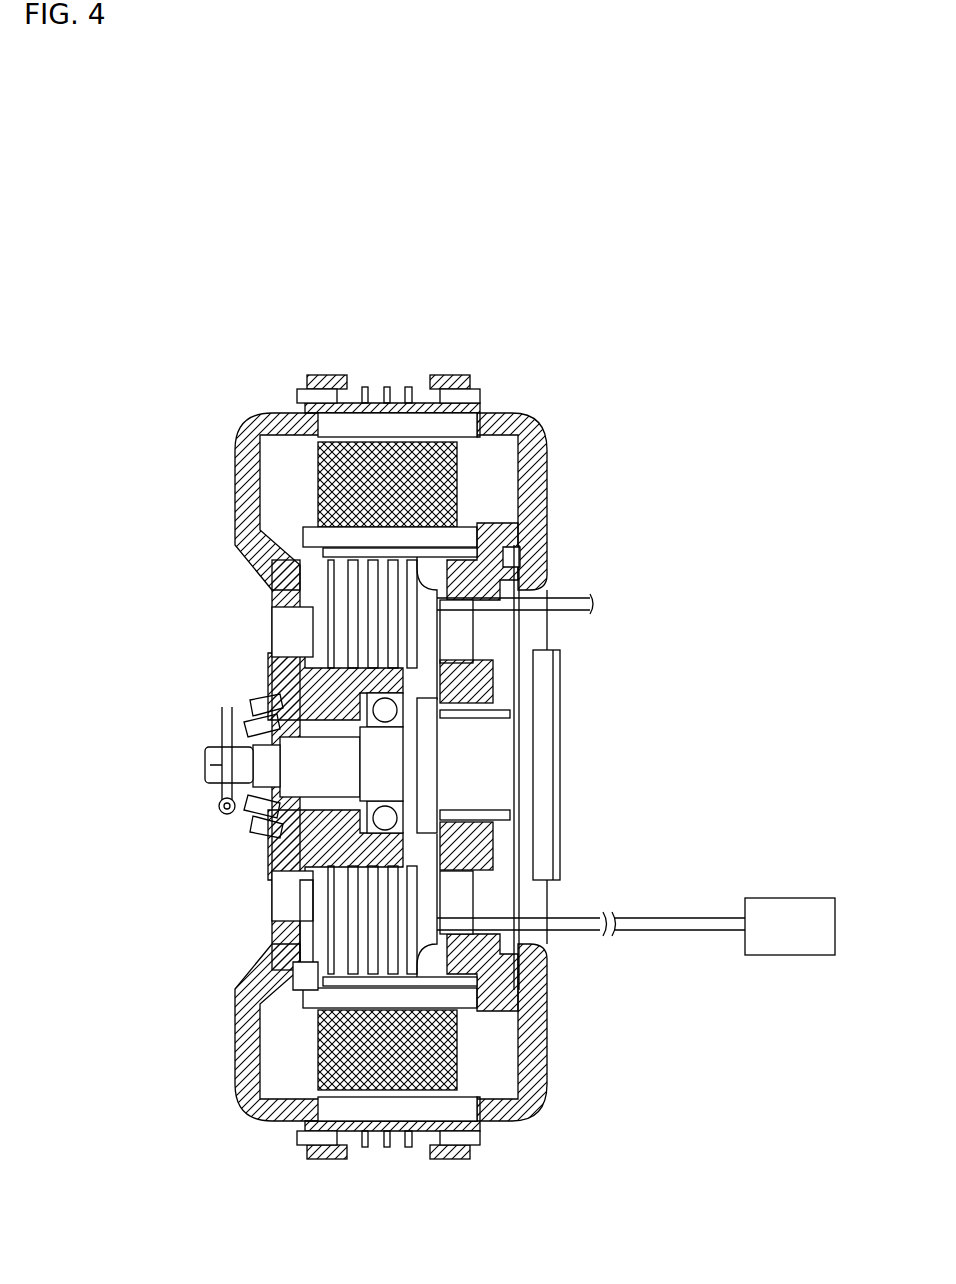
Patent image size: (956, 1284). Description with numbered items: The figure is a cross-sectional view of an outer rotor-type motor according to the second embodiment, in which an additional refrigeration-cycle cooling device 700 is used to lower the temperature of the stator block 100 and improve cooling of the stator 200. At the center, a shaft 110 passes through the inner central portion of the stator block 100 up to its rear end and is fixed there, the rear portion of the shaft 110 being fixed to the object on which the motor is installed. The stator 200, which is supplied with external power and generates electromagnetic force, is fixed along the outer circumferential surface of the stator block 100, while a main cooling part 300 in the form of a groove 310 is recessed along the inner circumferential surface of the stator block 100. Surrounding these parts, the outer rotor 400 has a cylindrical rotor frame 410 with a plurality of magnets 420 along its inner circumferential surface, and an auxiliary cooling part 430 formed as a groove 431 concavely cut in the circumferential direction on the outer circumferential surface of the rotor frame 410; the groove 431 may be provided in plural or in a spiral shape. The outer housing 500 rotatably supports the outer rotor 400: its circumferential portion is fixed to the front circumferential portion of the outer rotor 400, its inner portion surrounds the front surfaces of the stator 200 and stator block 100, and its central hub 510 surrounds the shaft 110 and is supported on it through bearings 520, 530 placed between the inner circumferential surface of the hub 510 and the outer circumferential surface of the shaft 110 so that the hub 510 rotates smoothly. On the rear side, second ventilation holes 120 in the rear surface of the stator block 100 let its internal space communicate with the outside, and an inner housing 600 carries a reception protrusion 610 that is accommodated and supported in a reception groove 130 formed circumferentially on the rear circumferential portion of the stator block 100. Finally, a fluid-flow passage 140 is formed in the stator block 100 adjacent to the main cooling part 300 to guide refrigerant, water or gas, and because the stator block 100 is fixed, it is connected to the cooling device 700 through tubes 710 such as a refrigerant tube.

The stator block 100 is at (487, 686).
The shaft 110 is at (270, 839).
The second ventilation holes 120 is at (460, 641).
The reception groove 130 is at (505, 555).
The fluid-flow passage 140 is at (310, 984).
The stator 200 is at (450, 468).
The main cooling part 300 is at (340, 588).
The groove 310 is at (350, 575).
The outer rotor 400 is at (448, 650).
The rotor frame 410 is at (330, 376).
The magnets 420 is at (453, 377).
The auxiliary cooling part 430 is at (410, 378).
The groove 431 is at (377, 385).
The outer housing 500 is at (237, 471).
The hub 510 is at (320, 893).
The bearing 520 is at (216, 803).
The bearing 530 is at (553, 762).
The inner housing 600 is at (548, 1039).
The reception protrusion 610 is at (507, 520).
The cooling device 700 is at (798, 893).
The tubes 710 is at (480, 906).